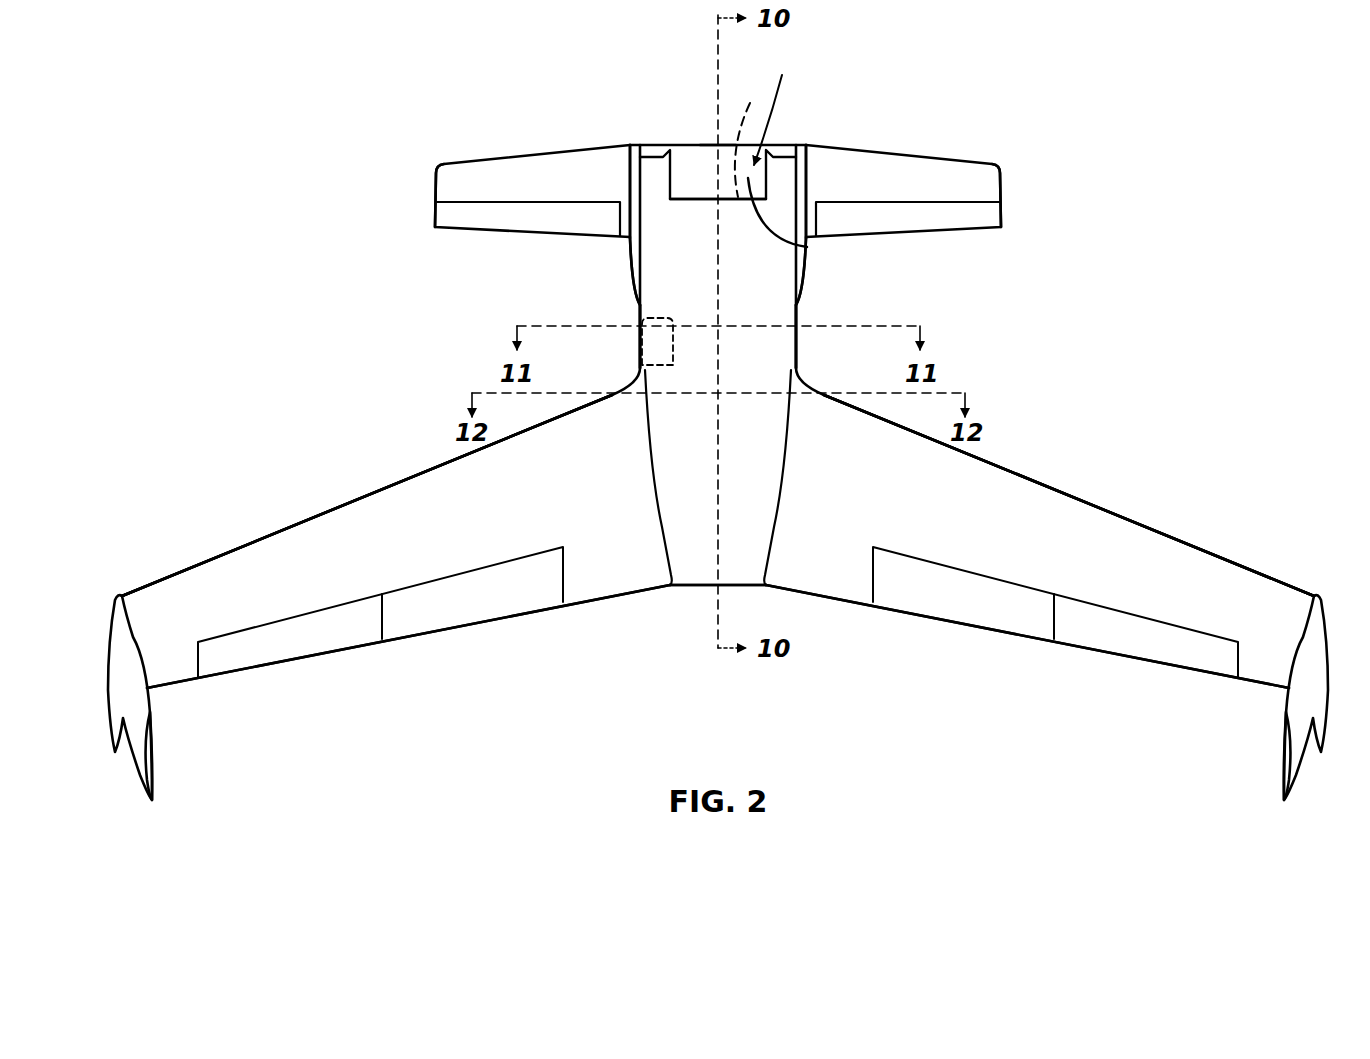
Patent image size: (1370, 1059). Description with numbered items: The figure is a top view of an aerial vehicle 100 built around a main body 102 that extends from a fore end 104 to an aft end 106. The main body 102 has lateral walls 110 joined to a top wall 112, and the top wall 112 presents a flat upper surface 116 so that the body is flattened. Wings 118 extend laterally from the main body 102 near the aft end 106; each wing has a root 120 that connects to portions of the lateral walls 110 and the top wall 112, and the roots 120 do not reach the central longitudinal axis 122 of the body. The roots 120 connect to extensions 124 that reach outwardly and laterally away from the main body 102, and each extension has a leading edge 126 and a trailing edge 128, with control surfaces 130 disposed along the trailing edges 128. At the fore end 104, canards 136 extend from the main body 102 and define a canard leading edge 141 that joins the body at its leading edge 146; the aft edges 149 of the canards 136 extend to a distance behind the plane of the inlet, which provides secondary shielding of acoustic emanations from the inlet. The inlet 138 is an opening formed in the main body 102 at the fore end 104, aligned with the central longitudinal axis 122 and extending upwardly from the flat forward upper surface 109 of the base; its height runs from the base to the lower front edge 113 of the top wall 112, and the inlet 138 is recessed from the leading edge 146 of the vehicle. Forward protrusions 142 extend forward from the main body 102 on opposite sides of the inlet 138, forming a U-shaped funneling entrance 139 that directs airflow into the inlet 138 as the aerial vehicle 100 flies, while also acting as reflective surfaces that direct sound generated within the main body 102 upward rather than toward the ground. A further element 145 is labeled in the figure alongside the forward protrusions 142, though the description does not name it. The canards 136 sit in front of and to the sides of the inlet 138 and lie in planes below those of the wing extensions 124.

The aerial vehicle 100 is at (246, 196).
The main body 102 is at (782, 316).
The fore end 104 is at (692, 157).
The aft end 106 is at (695, 590).
The flat forward upper surface 109 is at (807, 247).
The lateral walls 110 is at (640, 307).
The top wall 112 is at (758, 287).
The lower front edge 113 is at (692, 197).
The flat upper surface 116 is at (680, 380).
The wings 118 is at (367, 495).
The roots 120 is at (657, 498).
The central longitudinal axis 122 is at (718, 300).
The extensions 124 is at (432, 470).
The leading edges 126 is at (307, 520).
The trailing edges 128 is at (275, 663).
The control surfaces 130 is at (470, 612).
The canards 136 is at (545, 155).
The inlet 138 is at (748, 137).
The funneling entrance 139 is at (778, 106).
The canard leading edge 141 is at (485, 163).
The forward protrusions 142 is at (640, 148).
The fin root 145 is at (628, 187).
The leading edge 146 is at (707, 143).
The aft edges 149 is at (542, 235).